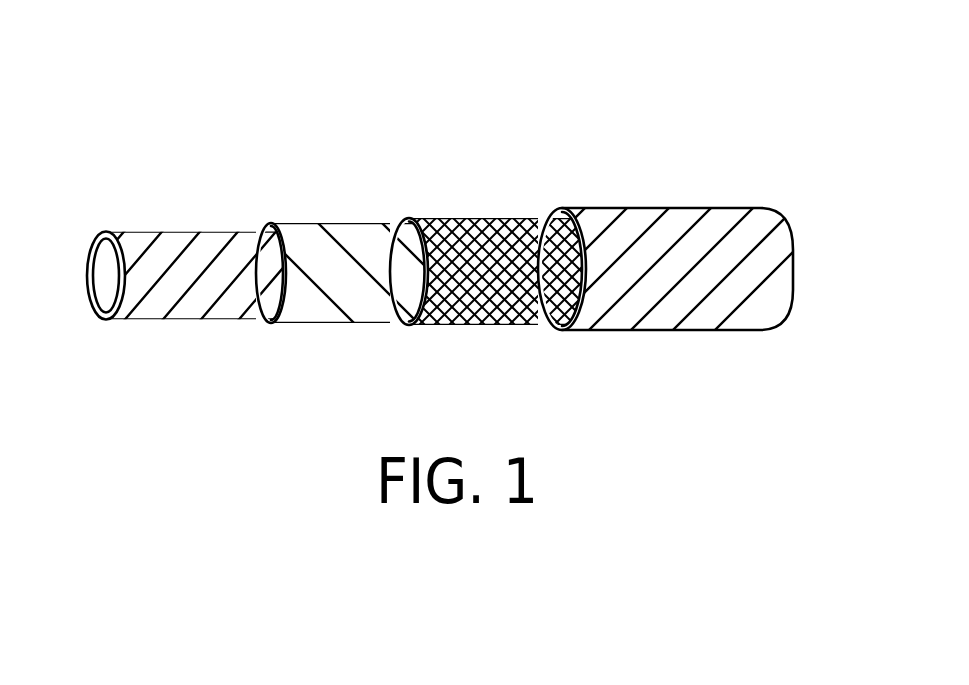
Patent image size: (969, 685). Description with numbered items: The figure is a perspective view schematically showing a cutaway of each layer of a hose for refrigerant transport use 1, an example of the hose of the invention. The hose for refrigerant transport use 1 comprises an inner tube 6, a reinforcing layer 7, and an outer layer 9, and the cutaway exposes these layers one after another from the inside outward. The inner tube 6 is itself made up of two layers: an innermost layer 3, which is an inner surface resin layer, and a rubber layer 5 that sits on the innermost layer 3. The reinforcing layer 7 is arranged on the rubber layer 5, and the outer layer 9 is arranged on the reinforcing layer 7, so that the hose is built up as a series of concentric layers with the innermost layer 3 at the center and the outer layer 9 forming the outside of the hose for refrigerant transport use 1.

The hose for refrigerant transport use 1 is at (742, 83).
The innermost layer 3 is at (182, 232).
The rubber layer 5 is at (342, 223).
The inner tube 6 is at (361, 144).
The reinforcing layer 7 is at (470, 218).
The outer layer 9 is at (652, 207).